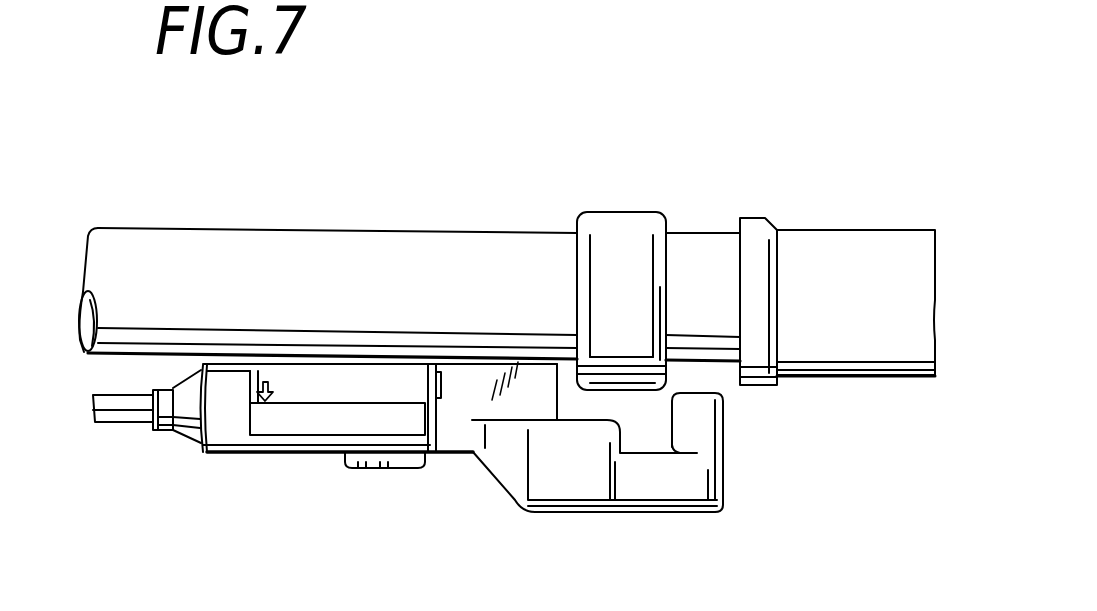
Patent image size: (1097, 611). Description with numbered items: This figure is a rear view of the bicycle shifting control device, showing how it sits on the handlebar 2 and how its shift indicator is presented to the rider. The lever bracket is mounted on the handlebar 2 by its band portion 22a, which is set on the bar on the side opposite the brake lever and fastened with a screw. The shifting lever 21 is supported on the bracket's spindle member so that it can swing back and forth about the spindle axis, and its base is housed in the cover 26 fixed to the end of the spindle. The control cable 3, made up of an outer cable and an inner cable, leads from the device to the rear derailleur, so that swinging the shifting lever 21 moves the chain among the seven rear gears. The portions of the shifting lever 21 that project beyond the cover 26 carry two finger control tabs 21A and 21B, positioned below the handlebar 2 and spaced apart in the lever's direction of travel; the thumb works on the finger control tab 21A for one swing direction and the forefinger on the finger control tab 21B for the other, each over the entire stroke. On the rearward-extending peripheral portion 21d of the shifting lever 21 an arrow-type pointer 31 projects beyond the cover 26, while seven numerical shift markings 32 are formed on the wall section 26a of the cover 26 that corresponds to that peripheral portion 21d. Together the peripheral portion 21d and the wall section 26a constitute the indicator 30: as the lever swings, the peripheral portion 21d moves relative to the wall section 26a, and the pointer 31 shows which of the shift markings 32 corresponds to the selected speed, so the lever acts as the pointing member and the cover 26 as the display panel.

The handlebar 2 is at (212, 232).
The band portion 22a is at (640, 214).
The peripheral portion 21d is at (364, 378).
The arrow-type pointer 31 is at (271, 381).
The indicator 30 is at (248, 428).
The numerical shift markings 32 is at (308, 434).
The wall section 26a is at (333, 434).
The cover 26 is at (448, 460).
The shifting lever 21 is at (494, 478).
The finger control tab 21A is at (585, 495).
The finger control tab 21B is at (700, 429).
The control cable 3 is at (120, 423).